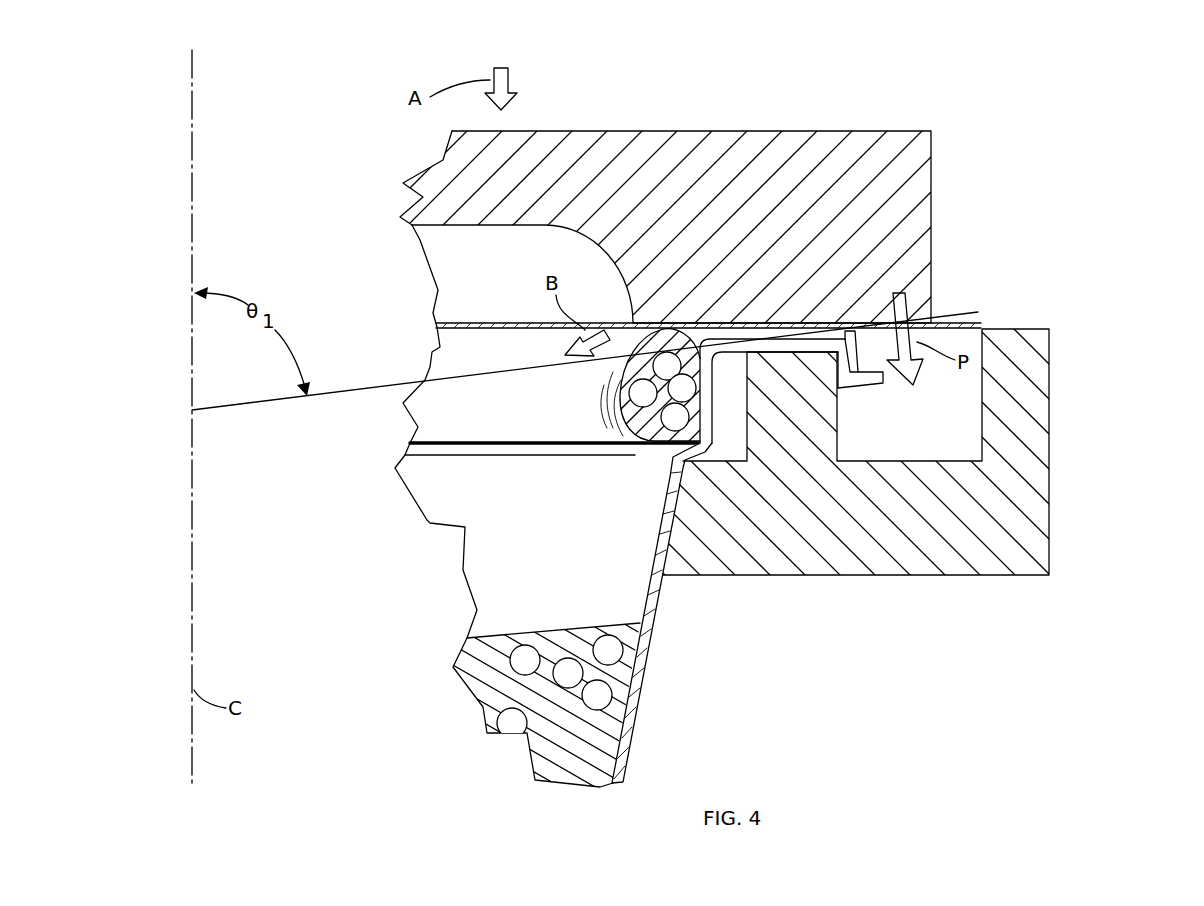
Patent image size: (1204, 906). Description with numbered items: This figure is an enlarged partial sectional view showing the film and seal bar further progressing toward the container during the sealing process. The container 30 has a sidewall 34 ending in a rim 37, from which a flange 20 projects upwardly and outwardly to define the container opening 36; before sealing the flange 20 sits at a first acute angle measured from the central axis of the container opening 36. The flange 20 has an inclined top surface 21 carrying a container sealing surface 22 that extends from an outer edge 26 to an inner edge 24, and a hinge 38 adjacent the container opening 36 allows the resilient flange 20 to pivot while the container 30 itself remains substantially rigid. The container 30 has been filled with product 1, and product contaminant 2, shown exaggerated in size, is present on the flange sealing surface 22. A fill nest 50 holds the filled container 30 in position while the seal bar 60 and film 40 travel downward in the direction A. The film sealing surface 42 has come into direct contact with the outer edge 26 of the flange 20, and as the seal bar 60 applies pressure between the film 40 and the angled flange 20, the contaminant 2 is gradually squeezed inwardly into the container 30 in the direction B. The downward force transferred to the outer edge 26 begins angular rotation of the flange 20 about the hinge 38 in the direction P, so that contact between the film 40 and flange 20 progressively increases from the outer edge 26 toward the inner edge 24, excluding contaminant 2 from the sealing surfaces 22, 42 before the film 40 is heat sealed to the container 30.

The container product 1 is at (650, 740).
The product contaminant 2 is at (432, 352).
The flange 20 is at (904, 386).
The top surface 21 is at (783, 325).
The sealing surface 22 is at (730, 325).
The inner edge 24 is at (692, 338).
The outer edge 26 is at (850, 328).
The container 30 is at (715, 508).
The sidewall 34 is at (647, 653).
The container opening 36 is at (593, 494).
The rim 37 is at (727, 447).
The hinge 38 is at (727, 408).
The film 40 is at (977, 313).
The film sealing surface 42 is at (964, 340).
The fill nest 50 is at (1088, 469).
The seal bar 60 is at (958, 172).